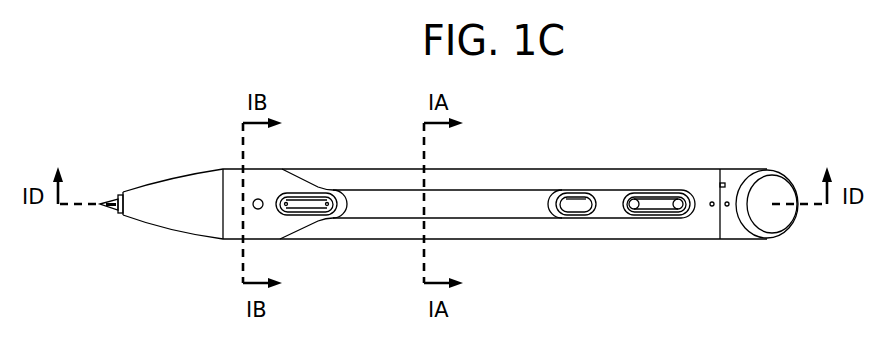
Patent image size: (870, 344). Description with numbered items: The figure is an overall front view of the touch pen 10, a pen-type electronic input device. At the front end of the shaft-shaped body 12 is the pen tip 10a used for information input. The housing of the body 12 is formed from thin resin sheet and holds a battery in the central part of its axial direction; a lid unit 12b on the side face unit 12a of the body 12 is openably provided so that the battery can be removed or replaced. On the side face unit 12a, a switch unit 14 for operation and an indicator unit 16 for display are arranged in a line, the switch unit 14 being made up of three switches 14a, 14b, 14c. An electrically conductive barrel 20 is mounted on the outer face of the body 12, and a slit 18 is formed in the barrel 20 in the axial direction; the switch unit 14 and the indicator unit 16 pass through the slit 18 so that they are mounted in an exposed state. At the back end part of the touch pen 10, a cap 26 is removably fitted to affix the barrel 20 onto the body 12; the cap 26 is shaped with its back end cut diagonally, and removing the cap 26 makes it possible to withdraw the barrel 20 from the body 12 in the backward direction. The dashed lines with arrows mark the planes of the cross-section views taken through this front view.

The touch pen 10 is at (160, 164).
The pen tip 10a is at (113, 211).
The body 12 is at (230, 192).
The side face unit 12a is at (463, 210).
The lid unit 12b is at (498, 198).
The switch unit 14 is at (664, 172).
The switch 14a is at (306, 200).
The switch 14b is at (578, 200).
The switch 14c is at (648, 198).
The indicator unit 16 is at (262, 199).
The slit 18 is at (525, 208).
The barrel 20 is at (392, 236).
The cap 26 is at (735, 180).